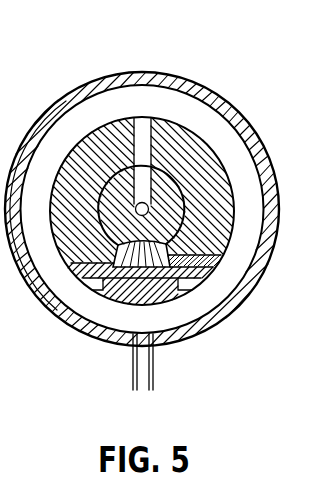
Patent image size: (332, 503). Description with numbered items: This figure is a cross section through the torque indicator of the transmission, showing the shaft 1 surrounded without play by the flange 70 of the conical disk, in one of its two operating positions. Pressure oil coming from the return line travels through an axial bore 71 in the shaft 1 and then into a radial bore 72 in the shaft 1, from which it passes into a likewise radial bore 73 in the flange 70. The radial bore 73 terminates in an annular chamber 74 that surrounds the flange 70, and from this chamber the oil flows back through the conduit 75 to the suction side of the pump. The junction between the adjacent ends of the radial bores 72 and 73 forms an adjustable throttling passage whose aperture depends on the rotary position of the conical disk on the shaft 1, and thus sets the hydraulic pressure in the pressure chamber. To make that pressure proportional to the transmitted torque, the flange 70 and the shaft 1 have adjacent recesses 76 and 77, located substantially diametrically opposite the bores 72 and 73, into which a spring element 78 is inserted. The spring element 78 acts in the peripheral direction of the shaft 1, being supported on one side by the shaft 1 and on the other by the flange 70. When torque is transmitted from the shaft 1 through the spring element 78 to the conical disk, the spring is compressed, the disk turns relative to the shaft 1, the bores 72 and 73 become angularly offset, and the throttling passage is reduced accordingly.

The shaft 1 is at (168, 186).
The flange 70 is at (220, 187).
The axial bore 71 is at (182, 155).
The radial bore 72 is at (97, 133).
The radial bore 73 is at (140, 152).
The annular chamber 74 is at (147, 100).
The conduit 75 is at (155, 368).
The recess 76 is at (180, 210).
The recess 77 is at (195, 272).
The spring element 78 is at (205, 252).